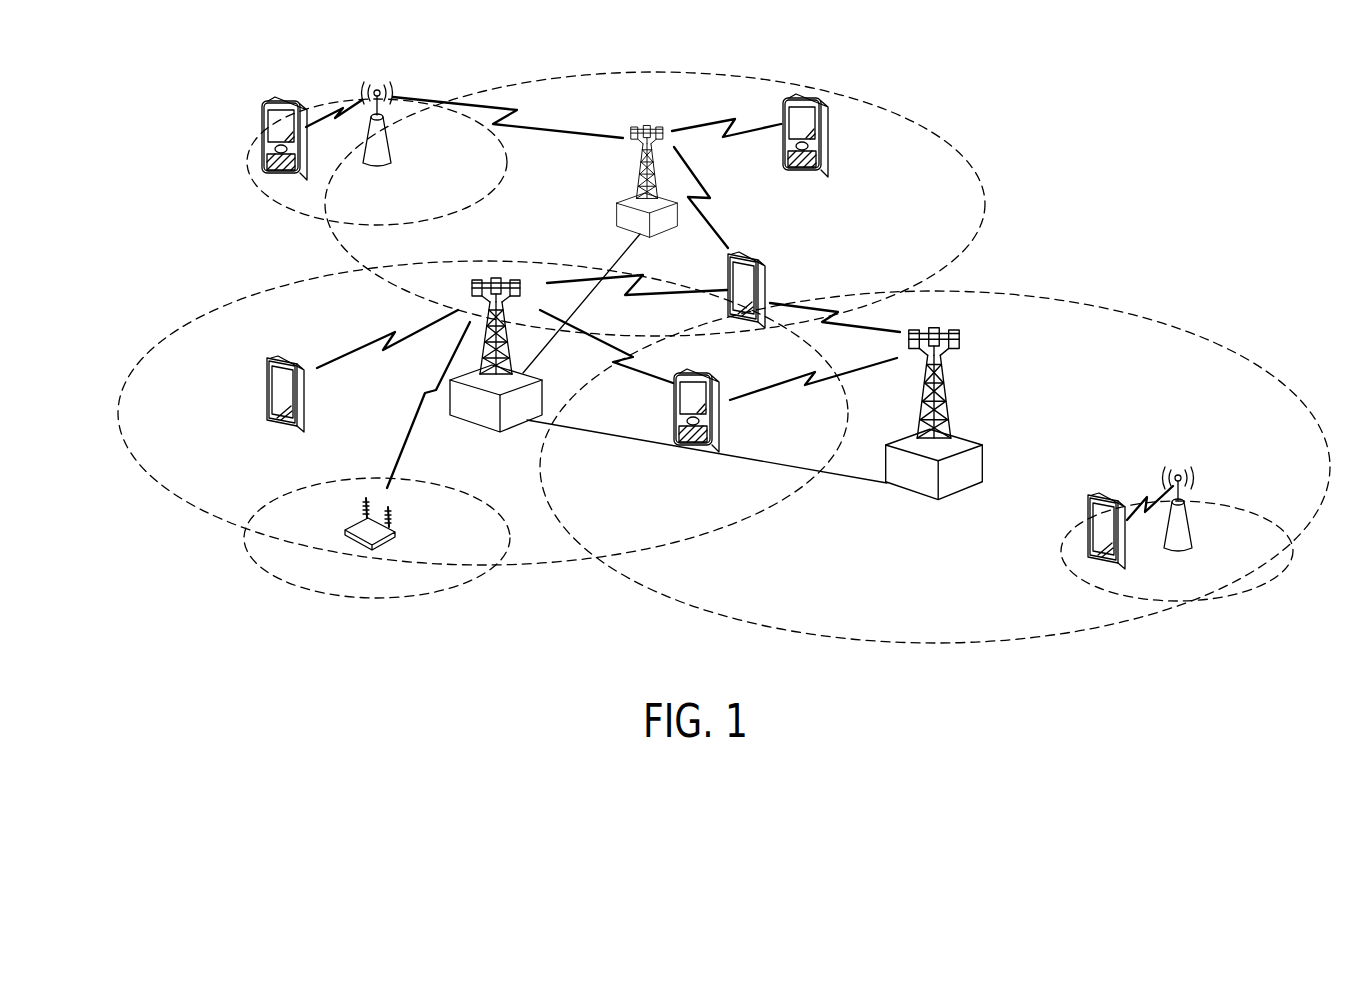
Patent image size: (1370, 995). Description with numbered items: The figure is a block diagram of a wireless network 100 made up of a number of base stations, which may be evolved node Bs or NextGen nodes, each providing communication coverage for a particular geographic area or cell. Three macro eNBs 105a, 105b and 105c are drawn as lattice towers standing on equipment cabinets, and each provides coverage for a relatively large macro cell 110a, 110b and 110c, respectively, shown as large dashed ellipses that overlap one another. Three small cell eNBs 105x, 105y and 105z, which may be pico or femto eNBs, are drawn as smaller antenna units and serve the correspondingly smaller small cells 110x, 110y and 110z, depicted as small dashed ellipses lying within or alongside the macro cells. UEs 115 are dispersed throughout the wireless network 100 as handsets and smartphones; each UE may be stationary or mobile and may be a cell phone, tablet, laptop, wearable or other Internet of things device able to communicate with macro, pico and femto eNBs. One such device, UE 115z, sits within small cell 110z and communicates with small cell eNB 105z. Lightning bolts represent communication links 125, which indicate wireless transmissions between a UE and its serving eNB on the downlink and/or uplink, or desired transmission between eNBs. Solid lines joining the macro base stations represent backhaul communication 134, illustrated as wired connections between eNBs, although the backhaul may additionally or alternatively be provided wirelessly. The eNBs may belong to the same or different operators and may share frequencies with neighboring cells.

The wireless network 100 is at (1057, 149).
The macro eNB 105a is at (490, 430).
The macro eNB 105b is at (617, 220).
The macro eNB 105c is at (965, 500).
The small cell eNB 105x is at (396, 538).
The small cell eNB 105y is at (390, 162).
The small cell eNB 105z is at (1195, 528).
The macro cell 110a is at (212, 305).
The macro cell 110b is at (810, 90).
The macro cell 110c is at (1126, 308).
The small cell 110x is at (310, 600).
The small cell 110y is at (272, 200).
The small cell 110z is at (1248, 603).
The UE 115 is at (262, 120).
The UE 115z is at (1088, 515).
The communication link 125 is at (340, 108).
The backhaul communication 134 is at (610, 258).